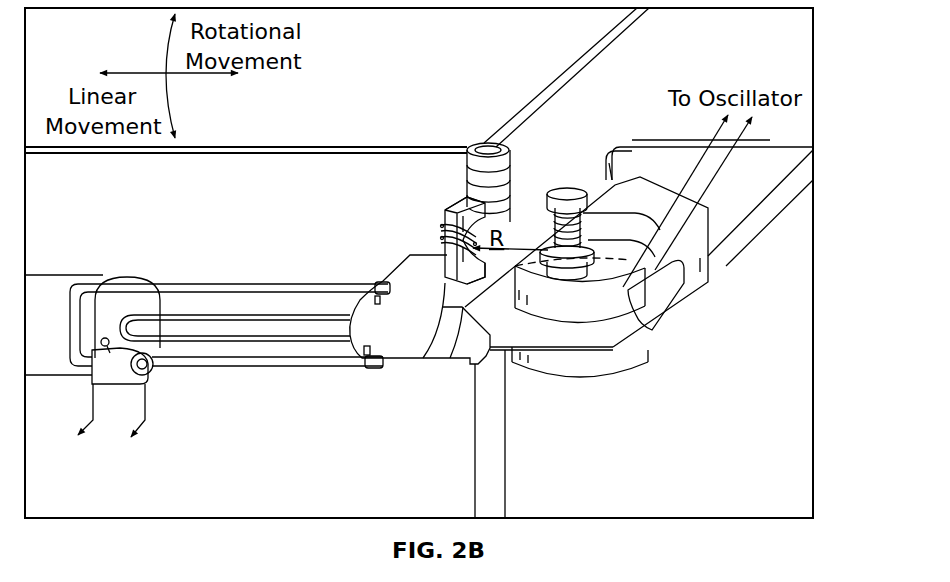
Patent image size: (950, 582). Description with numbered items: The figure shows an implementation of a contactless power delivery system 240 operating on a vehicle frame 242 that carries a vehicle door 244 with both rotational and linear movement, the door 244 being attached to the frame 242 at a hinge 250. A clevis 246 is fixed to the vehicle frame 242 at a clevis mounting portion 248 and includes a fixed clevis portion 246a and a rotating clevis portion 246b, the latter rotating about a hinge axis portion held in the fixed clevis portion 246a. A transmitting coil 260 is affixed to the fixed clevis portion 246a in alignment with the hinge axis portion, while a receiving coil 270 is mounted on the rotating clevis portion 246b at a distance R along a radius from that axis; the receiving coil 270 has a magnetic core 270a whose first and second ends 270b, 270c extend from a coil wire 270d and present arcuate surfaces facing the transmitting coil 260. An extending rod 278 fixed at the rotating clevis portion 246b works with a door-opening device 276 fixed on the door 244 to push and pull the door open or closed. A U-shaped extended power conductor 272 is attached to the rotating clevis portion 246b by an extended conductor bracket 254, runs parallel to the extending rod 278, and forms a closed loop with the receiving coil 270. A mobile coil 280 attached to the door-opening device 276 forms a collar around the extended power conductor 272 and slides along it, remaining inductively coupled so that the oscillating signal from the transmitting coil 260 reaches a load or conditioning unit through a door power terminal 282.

The contactless power delivery system 240 is at (507, 83).
The vehicle frame 242 is at (419, 137).
The vehicle door 244 is at (319, 346).
The clevis 246 is at (577, 389).
The fixed clevis portion 246a is at (622, 289).
The rotating clevis portion 246b is at (570, 351).
The clevis mounting portion 248 is at (606, 255).
The hinge 250 is at (490, 145).
The extended conductor bracket 254 is at (378, 316).
The transmitting coil 260 is at (568, 189).
The receiving coil 270 is at (445, 207).
The magnetic core 270a is at (443, 253).
The first end 270b is at (512, 200).
The second end 270c is at (583, 307).
The coil wire 270d is at (450, 257).
The extended power conductor 272 is at (172, 284).
The door-opening device 276 is at (102, 280).
The extending rod 278 is at (235, 328).
The mobile coil 280 is at (150, 384).
The door power terminal 282 is at (102, 456).